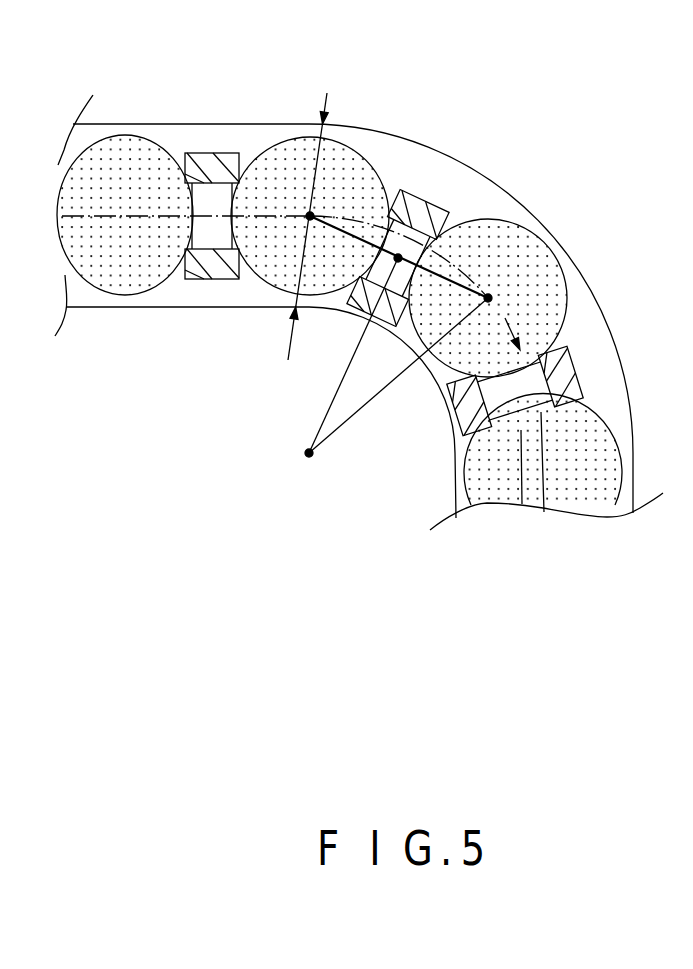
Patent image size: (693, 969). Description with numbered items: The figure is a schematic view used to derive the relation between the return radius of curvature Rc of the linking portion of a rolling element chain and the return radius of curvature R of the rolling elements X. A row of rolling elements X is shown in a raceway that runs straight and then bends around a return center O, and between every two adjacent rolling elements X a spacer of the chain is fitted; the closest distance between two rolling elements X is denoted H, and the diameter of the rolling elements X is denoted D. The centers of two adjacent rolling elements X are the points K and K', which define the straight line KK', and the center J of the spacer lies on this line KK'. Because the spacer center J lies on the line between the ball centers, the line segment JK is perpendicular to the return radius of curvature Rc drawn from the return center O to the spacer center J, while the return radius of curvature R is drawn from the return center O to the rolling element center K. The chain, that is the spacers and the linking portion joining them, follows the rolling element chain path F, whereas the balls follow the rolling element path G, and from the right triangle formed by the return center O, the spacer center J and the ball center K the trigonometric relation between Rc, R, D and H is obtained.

The rolling element X is at (114, 153).
The closest distance between two rolling elements H is at (192, 153).
The center of adjacent rolling element K' is at (310, 184).
The center of the spacer J is at (398, 256).
The center of rolling element K is at (488, 271).
The rolling element path G is at (505, 318).
The rolling element chain path F is at (543, 358).
The diameter of the rolling elements D is at (288, 226).
The return radius of curvature of the linking portion Rc is at (353, 355).
The return radius of curvature of the rolling elements R is at (398, 375).
The return center O is at (299, 472).